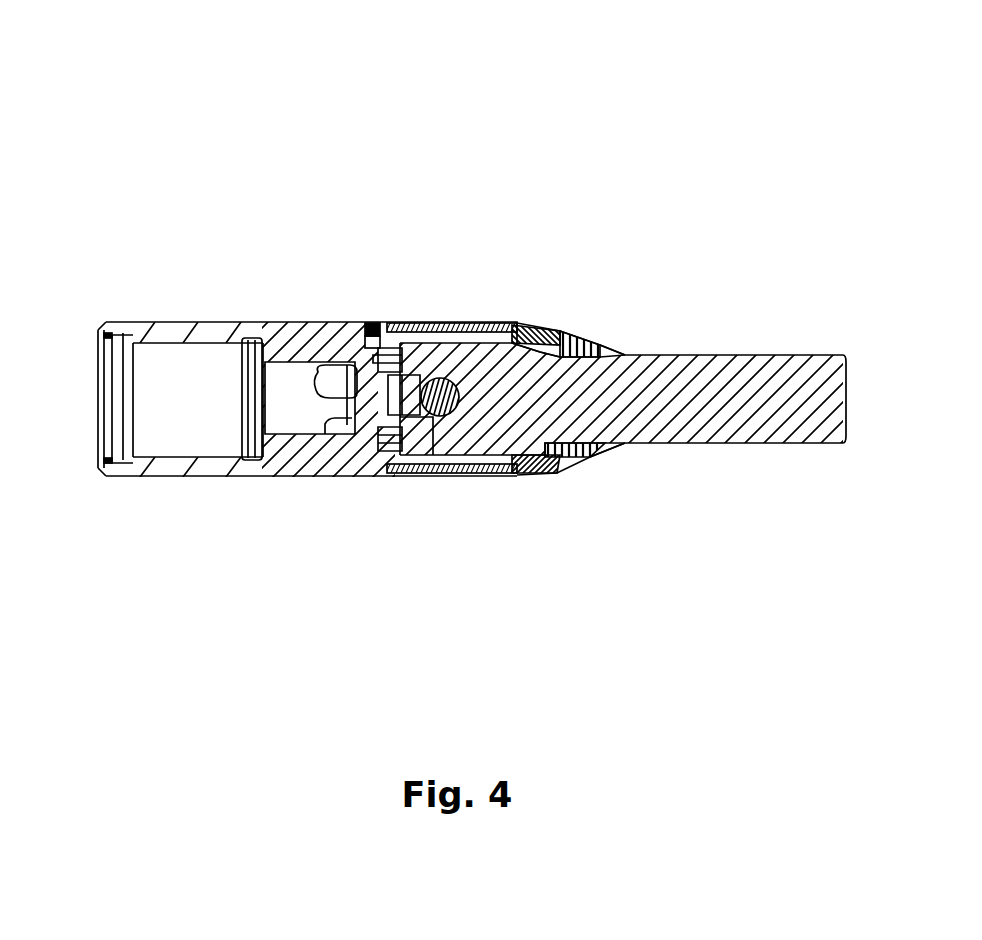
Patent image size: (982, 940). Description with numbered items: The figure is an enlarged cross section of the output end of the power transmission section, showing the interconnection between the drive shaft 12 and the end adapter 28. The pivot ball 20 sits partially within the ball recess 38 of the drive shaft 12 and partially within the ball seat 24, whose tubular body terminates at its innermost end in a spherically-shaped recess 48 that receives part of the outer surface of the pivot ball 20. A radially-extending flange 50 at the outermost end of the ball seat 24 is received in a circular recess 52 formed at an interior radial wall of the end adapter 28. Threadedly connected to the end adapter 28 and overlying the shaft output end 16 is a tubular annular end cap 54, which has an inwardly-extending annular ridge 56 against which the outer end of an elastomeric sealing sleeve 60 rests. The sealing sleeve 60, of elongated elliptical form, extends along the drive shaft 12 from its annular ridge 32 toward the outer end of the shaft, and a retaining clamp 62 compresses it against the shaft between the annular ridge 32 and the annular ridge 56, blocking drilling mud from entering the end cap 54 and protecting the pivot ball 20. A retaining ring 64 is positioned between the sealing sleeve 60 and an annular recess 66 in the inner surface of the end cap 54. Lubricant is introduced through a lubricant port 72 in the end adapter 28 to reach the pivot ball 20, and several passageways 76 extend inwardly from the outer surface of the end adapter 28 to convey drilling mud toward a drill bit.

The drive shaft 12 is at (788, 357).
The shaft output end 16 is at (455, 322).
The pivot ball 20 is at (386, 462).
The ball seat 24 is at (378, 440).
The end adapter 28 is at (175, 333).
The annular ridge 32 is at (621, 352).
The ball recess 38 is at (460, 455).
The spherically-shaped recess 48 is at (430, 440).
The radially-extending flange 50 is at (385, 392).
The circular recess 52 is at (390, 393).
The annular end cap 54 is at (407, 322).
The annular ridge 56 is at (512, 327).
The sealing sleeve 60 is at (555, 478).
The retaining clamp 62 is at (527, 327).
The retaining ring 64 is at (545, 477).
The annular recess 66 is at (580, 334).
The lubricant port 72 is at (387, 323).
The passageways 76 is at (320, 383).